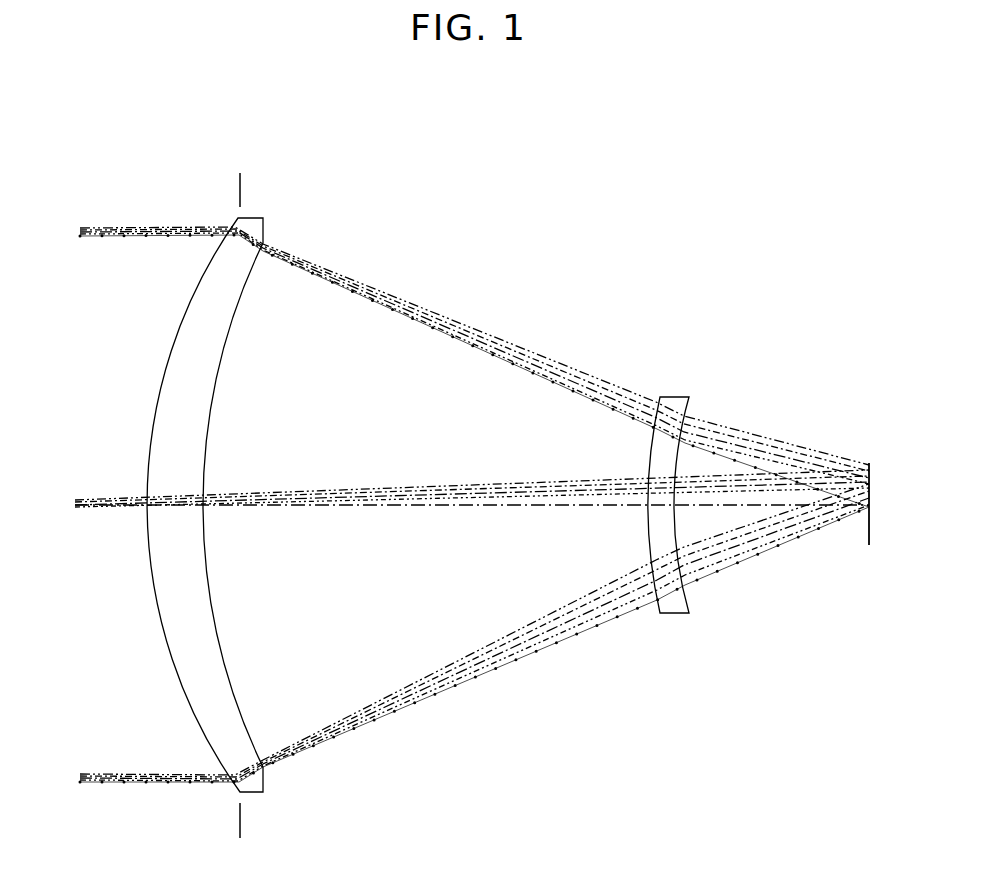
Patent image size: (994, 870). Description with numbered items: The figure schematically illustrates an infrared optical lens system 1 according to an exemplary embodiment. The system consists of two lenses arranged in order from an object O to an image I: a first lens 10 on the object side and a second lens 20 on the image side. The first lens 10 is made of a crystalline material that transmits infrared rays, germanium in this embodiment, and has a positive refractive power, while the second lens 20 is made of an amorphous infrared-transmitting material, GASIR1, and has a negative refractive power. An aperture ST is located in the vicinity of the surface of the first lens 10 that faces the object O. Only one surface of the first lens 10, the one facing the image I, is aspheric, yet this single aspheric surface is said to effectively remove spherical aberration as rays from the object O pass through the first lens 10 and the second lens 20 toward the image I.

The infrared optical lens system 1 is at (642, 223).
The first lens 10 is at (252, 218).
The second lens 20 is at (673, 396).
The aperture ST is at (238, 190).
The object O is at (459, 494).
The image I is at (877, 504).